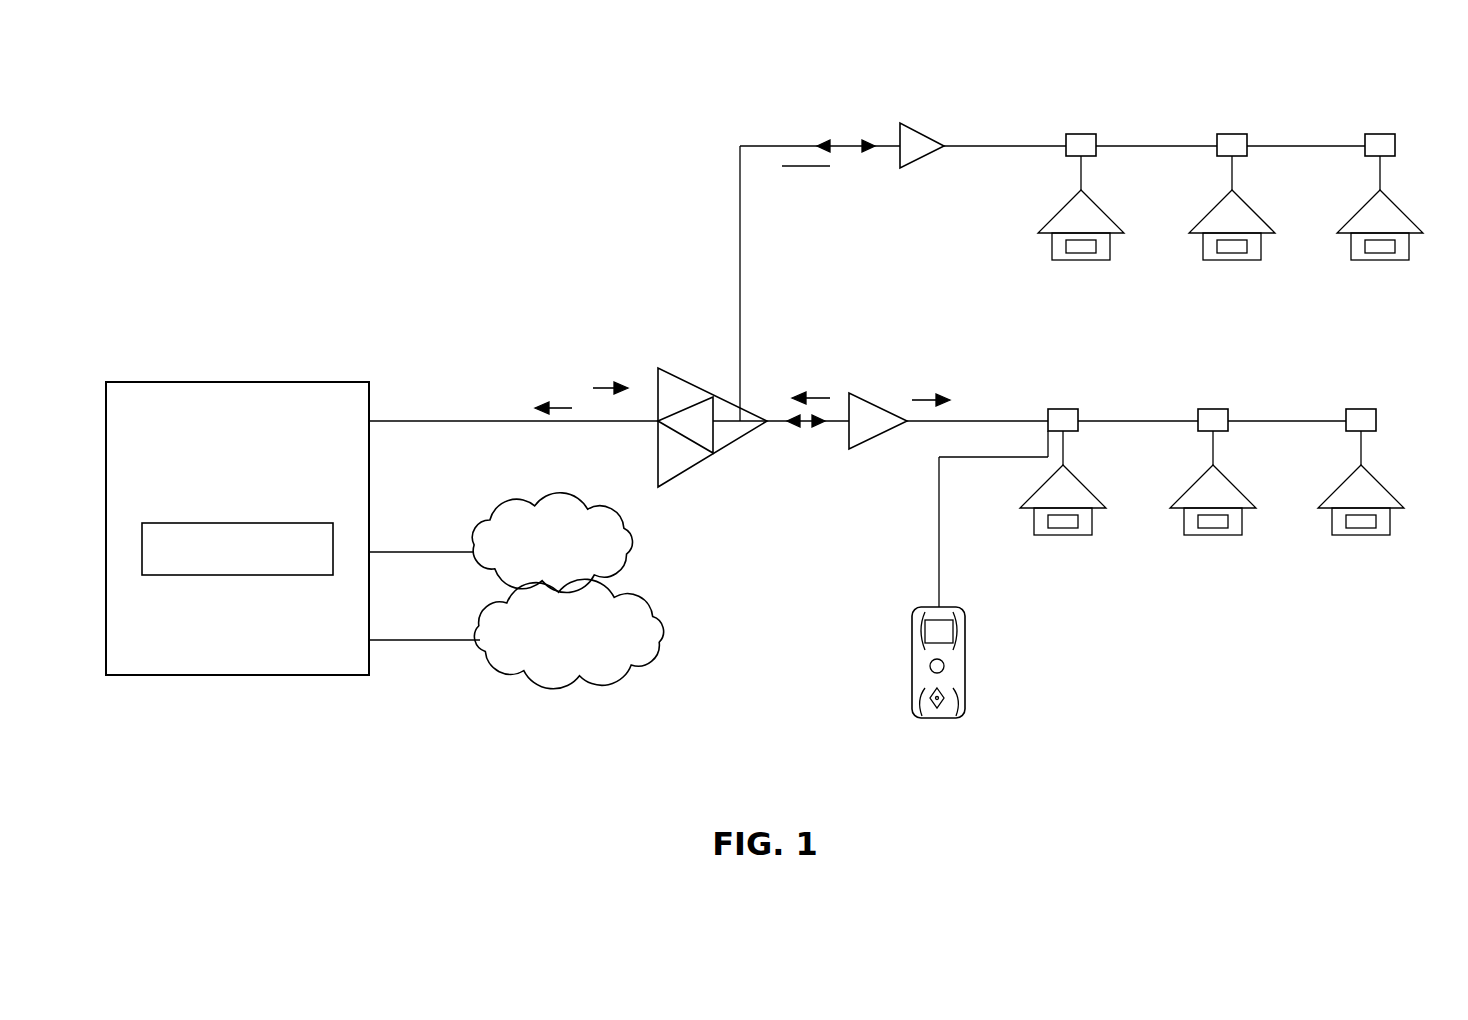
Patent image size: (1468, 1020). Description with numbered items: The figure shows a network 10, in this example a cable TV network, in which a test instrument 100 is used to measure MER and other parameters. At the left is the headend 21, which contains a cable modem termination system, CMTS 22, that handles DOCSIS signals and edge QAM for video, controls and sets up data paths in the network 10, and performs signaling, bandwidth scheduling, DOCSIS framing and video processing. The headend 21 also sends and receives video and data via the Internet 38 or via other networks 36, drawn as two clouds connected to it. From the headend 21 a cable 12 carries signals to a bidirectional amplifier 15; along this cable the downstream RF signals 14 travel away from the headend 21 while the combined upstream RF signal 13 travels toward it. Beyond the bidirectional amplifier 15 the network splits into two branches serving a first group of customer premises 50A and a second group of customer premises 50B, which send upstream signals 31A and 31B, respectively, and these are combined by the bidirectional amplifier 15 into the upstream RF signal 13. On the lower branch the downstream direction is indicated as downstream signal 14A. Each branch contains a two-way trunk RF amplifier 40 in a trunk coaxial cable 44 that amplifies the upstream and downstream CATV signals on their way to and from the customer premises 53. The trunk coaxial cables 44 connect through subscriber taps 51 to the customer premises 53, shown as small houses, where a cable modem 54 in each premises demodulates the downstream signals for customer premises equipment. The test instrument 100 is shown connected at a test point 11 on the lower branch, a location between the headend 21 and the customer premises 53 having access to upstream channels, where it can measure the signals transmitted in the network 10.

The network 10 is at (638, 111).
The headend 21 is at (237, 528).
The cable modem termination system (CMTS) 22 is at (237, 549).
The Internet 38 is at (505, 522).
The other networks 36 is at (601, 674).
The cable 12 is at (633, 426).
The upstream RF signal 13 is at (549, 400).
The downstream RF signals 14 is at (610, 382).
The downstream signal direction on branch 14A is at (930, 394).
The bidirectional amplifier 15 is at (672, 368).
The upstream signal 31A is at (808, 173).
The upstream signal 31B is at (802, 390).
The two-way trunk RF amplifier 40 is at (897, 426).
The trunk coaxial cable 44 is at (986, 419).
The subscriber tap 51 is at (1066, 156).
The test point 11 is at (1055, 409).
The customer premises 53 is at (1046, 226).
The cable modem 54 is at (1066, 246).
The first group of customer premises 50A is at (1138, 276).
The second group of customer premises 50B is at (1250, 321).
The test instrument 100 is at (966, 665).